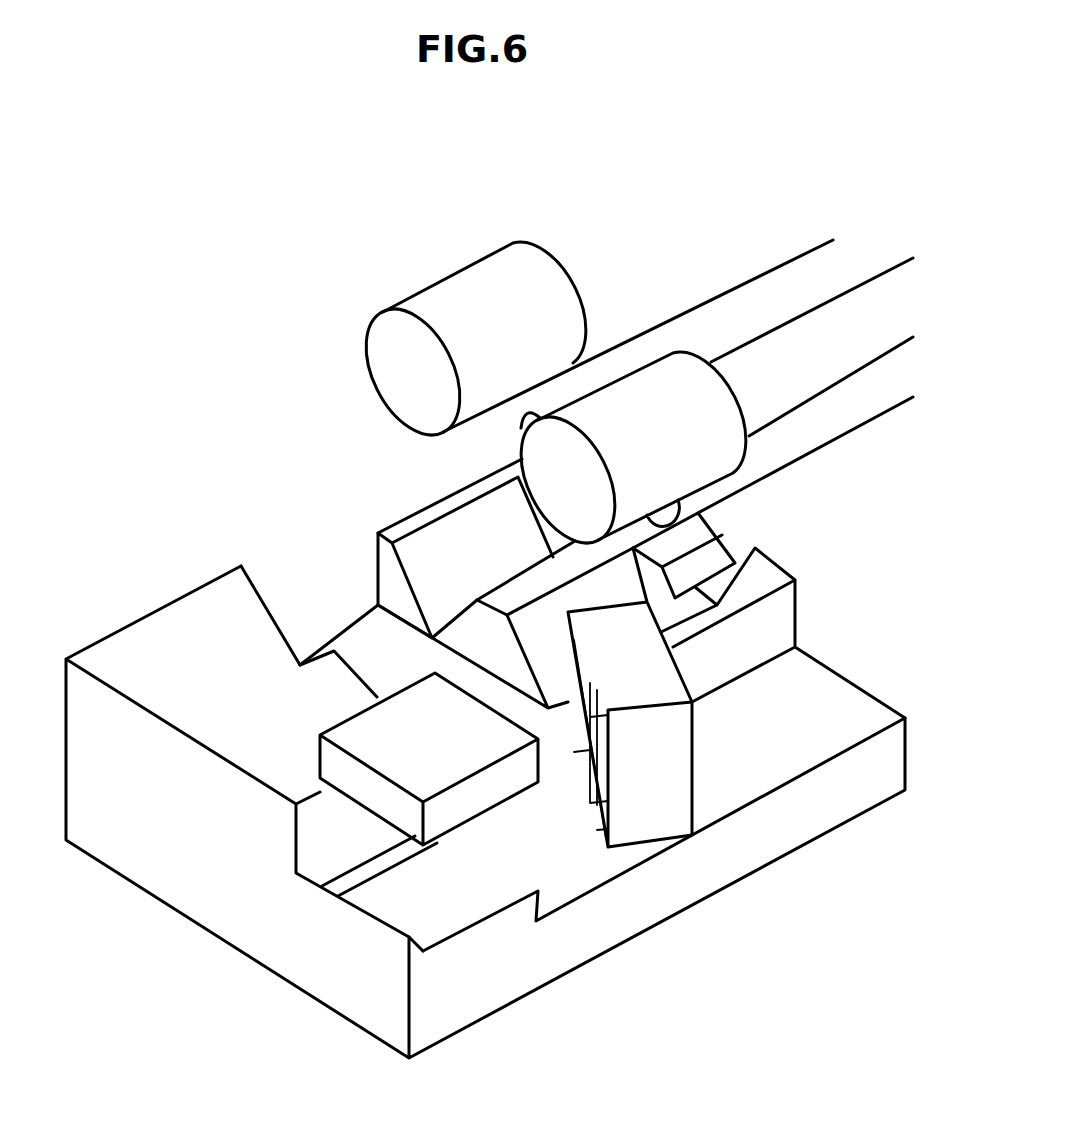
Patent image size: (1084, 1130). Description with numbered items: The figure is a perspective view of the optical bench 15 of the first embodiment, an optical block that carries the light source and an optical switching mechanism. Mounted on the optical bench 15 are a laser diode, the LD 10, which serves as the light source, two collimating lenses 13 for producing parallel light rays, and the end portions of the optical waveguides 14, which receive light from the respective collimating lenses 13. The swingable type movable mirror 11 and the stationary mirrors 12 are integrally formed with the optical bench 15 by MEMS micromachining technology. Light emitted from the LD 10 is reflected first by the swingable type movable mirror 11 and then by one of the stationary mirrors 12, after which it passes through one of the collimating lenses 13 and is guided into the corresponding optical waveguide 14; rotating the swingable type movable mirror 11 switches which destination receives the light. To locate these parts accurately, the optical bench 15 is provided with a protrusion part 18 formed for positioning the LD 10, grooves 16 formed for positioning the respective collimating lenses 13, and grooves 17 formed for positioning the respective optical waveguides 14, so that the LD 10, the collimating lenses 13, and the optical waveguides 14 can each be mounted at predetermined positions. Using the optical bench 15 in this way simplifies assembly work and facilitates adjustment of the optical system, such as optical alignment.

The laser diode (LD) 10 is at (503, 788).
The swingable type movable mirror 11 is at (598, 780).
The stationary mirrors 12 is at (243, 567).
The collimating lenses 13 is at (483, 283).
The optical waveguides 14 is at (790, 288).
The optical bench 15 is at (250, 917).
The grooves 16 is at (462, 545).
The grooves 17 is at (713, 557).
The protrusion part 18 is at (419, 941).